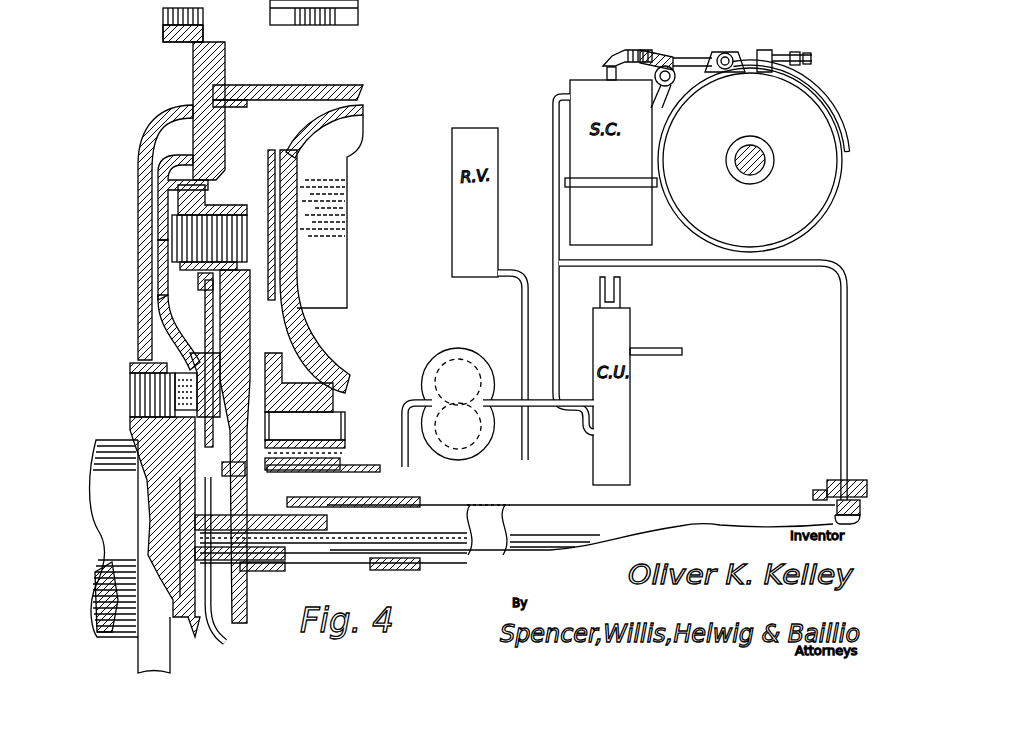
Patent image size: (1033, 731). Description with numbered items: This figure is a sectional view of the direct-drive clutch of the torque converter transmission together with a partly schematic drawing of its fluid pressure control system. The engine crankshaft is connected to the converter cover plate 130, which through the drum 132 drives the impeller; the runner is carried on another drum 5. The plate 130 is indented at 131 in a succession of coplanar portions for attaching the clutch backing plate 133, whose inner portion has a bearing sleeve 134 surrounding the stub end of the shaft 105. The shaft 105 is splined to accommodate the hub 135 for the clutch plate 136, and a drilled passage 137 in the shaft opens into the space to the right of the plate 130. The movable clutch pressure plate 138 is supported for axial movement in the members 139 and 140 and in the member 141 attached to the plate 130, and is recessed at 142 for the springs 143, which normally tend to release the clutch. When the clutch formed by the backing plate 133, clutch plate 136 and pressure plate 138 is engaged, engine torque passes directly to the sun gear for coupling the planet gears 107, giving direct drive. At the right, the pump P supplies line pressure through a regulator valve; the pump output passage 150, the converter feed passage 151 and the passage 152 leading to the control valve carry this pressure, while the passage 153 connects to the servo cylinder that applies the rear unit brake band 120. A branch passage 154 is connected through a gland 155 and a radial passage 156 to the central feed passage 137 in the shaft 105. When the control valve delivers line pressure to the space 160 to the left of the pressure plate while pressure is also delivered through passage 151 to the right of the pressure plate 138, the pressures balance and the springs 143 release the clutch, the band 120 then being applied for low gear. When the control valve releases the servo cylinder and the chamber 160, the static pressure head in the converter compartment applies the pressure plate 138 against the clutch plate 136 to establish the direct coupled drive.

The drum 5 is at (323, 123).
The shaft 105 is at (510, 508).
The planet gears 107 is at (345, 12).
The rear unit brake band 120 is at (742, 72).
The converter cover plate 130 is at (152, 238).
The indented portions 131 is at (167, 355).
The drum 132 is at (281, 96).
The clutch backing plate 133 is at (207, 327).
The bearing sleeve 134 is at (277, 512).
The hub 135 is at (268, 567).
The clutch plate 136 is at (322, 412).
The drilled passage 137 is at (310, 538).
The movable clutch pressure plate 138 is at (247, 338).
The supporting member 139 is at (223, 117).
The supporting member 140 is at (218, 167).
The member 141 is at (163, 283).
The recess 142 is at (282, 183).
The springs 143 is at (228, 218).
The pump output passage 150 is at (513, 403).
The converter feed passage 151 is at (528, 433).
The passage 152 is at (543, 403).
The passage 153 is at (552, 217).
The branch passage 154 is at (840, 378).
The gland 155 is at (827, 490).
The radial passage 156 is at (833, 512).
The pressure chamber 160 is at (183, 315).
The pump P is at (433, 375).